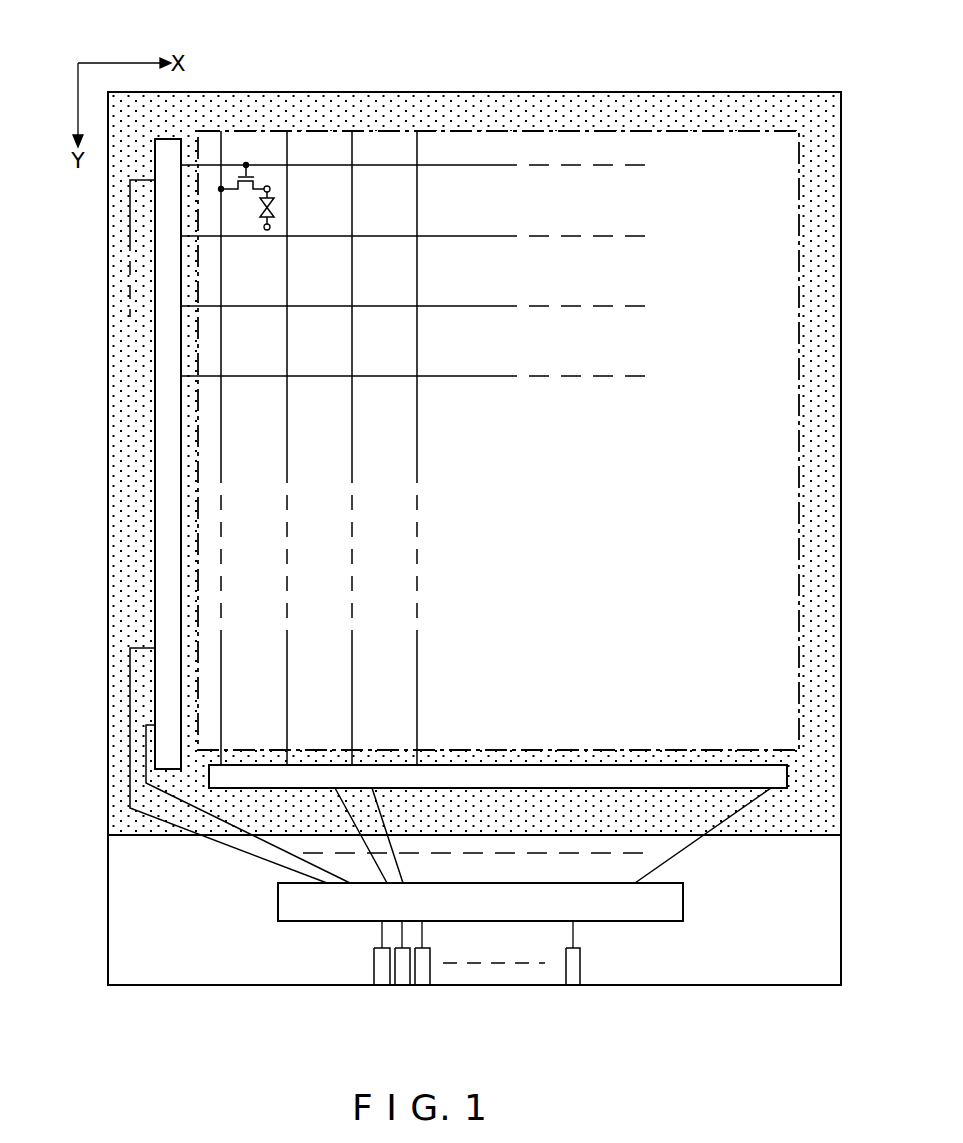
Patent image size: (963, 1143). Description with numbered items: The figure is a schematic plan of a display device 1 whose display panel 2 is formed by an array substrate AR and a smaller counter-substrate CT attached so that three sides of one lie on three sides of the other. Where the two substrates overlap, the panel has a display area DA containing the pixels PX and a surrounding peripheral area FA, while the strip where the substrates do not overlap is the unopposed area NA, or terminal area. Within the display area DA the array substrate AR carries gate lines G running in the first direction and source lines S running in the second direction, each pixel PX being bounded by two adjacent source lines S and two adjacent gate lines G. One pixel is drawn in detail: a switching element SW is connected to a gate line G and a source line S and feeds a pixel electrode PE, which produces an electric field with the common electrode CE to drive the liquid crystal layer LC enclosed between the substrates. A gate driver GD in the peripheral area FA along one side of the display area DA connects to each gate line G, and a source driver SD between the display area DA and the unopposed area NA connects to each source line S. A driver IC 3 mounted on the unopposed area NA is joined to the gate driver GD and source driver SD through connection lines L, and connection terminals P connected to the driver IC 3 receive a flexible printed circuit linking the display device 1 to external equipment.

The display device 1 is at (815, 69).
The display panel 2 is at (43, 822).
The driver IC 3 is at (676, 905).
The display area DA is at (708, 130).
The peripheral area FA is at (822, 450).
The unopposed area NA is at (818, 891).
The counter-substrate CT is at (118, 823).
The array substrate AR is at (118, 878).
The pixel PX is at (276, 157).
The switching element SW is at (245, 195).
The pixel electrode PE is at (272, 189).
The liquid crystal layer LC is at (274, 208).
The common electrode CE is at (272, 230).
The gate line G is at (450, 165).
The source line S is at (225, 705).
The gate driver GD is at (167, 583).
The source driver SD is at (703, 775).
The connection line L is at (283, 851).
The connection terminal P is at (401, 980).